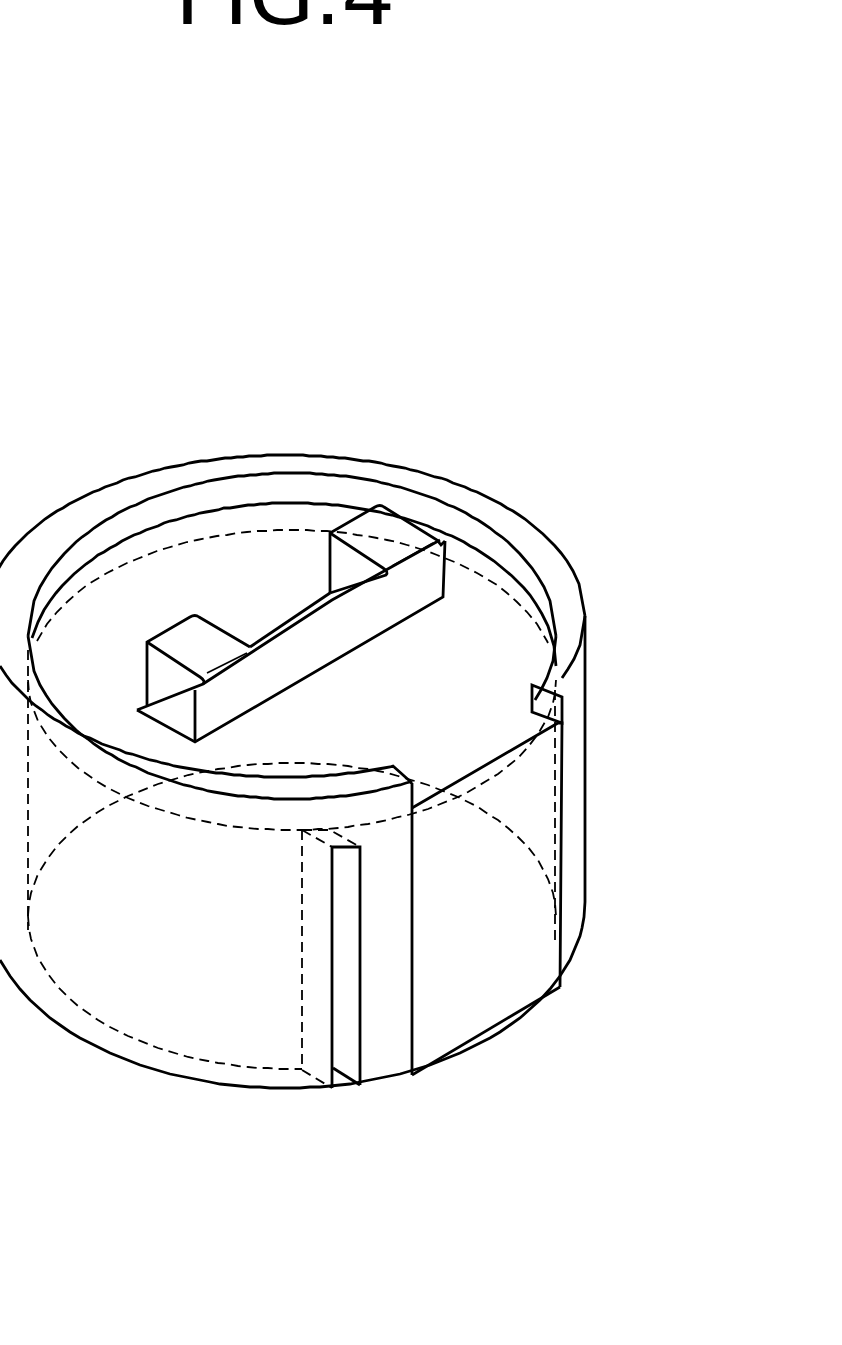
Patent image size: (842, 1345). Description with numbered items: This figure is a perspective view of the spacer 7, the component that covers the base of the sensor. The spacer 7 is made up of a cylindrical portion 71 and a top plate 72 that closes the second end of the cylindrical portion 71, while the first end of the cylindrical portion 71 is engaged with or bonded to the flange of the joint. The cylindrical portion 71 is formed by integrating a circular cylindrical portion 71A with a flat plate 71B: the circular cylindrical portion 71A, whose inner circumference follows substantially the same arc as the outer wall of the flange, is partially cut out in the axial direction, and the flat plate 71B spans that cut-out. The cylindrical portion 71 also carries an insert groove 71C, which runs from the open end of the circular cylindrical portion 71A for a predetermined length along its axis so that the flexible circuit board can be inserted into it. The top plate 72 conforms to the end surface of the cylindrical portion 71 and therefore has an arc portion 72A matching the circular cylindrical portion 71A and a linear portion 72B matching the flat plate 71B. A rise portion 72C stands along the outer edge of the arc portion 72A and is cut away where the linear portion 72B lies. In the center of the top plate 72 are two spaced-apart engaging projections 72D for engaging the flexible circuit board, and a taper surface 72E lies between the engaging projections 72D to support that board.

The spacer 7 is at (598, 525).
The cylindrical portion 71 is at (272, 1167).
The circular cylindrical portion 71A is at (392, 1050).
The flat plate 71B is at (492, 995).
The insert groove 71C is at (345, 937).
The top plate 72 is at (137, 596).
The arc portion 72A is at (228, 503).
The linear portion 72B is at (487, 767).
The rise portion 72C is at (477, 503).
The engaging projection 72D is at (393, 527).
The taper surface 72E is at (297, 615).